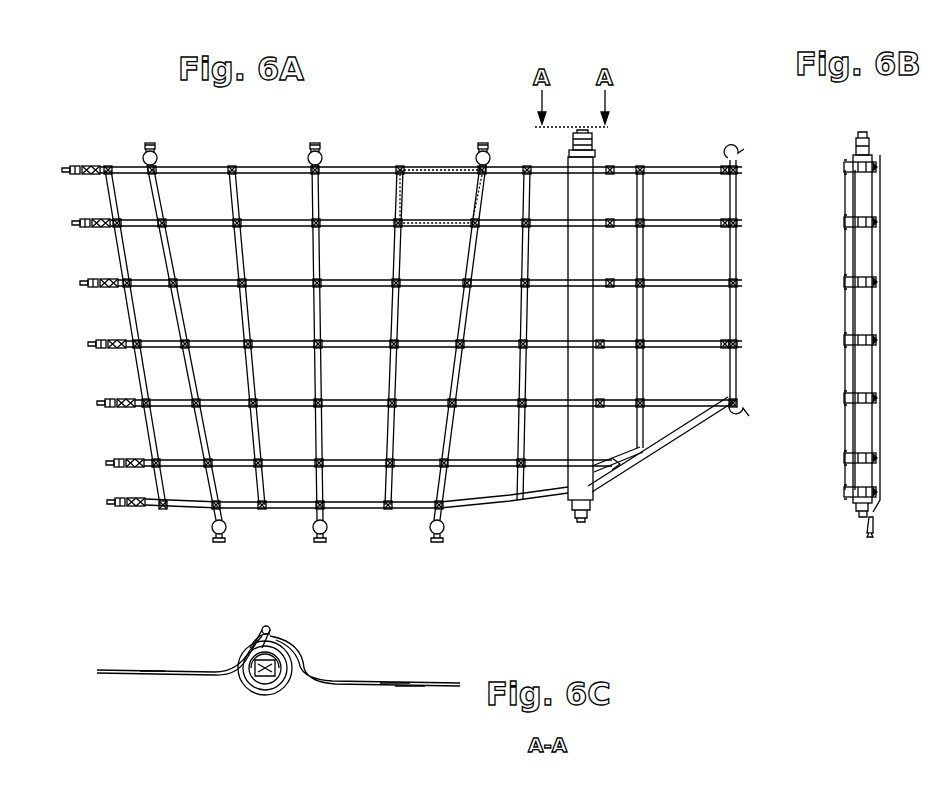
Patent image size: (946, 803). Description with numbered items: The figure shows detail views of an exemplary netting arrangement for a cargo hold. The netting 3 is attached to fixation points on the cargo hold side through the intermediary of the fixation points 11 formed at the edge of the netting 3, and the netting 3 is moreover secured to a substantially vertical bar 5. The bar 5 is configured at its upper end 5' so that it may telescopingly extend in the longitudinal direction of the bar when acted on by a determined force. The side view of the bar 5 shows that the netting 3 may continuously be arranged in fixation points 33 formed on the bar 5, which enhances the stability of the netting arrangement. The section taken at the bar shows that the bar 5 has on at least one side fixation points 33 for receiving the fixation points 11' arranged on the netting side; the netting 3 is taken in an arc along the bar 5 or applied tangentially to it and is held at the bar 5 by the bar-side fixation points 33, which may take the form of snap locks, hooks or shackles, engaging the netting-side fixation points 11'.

In FIG. 6A, the netting 3 is at (672, 445).
In FIG. 6B, the netting 3 is at (844, 168).
In FIG. 6C, the netting 3 is at (330, 680).
In FIG. 6A, the bar 5 is at (611, 323).
In FIG. 6B, the bar 5 is at (899, 334).
In FIG. 6C, the bar 5 is at (285, 698).
In FIG. 6A, the upper end of the bar 5' is at (541, 131).
In FIG. 6A, the fixation points 11 is at (402, 338).
In FIG. 6C, the netting-side fixation points 11' is at (208, 615).
In FIG. 6B, the bar-side fixation points 33 is at (845, 224).
In FIG. 6C, the bar-side fixation points 33 is at (272, 632).